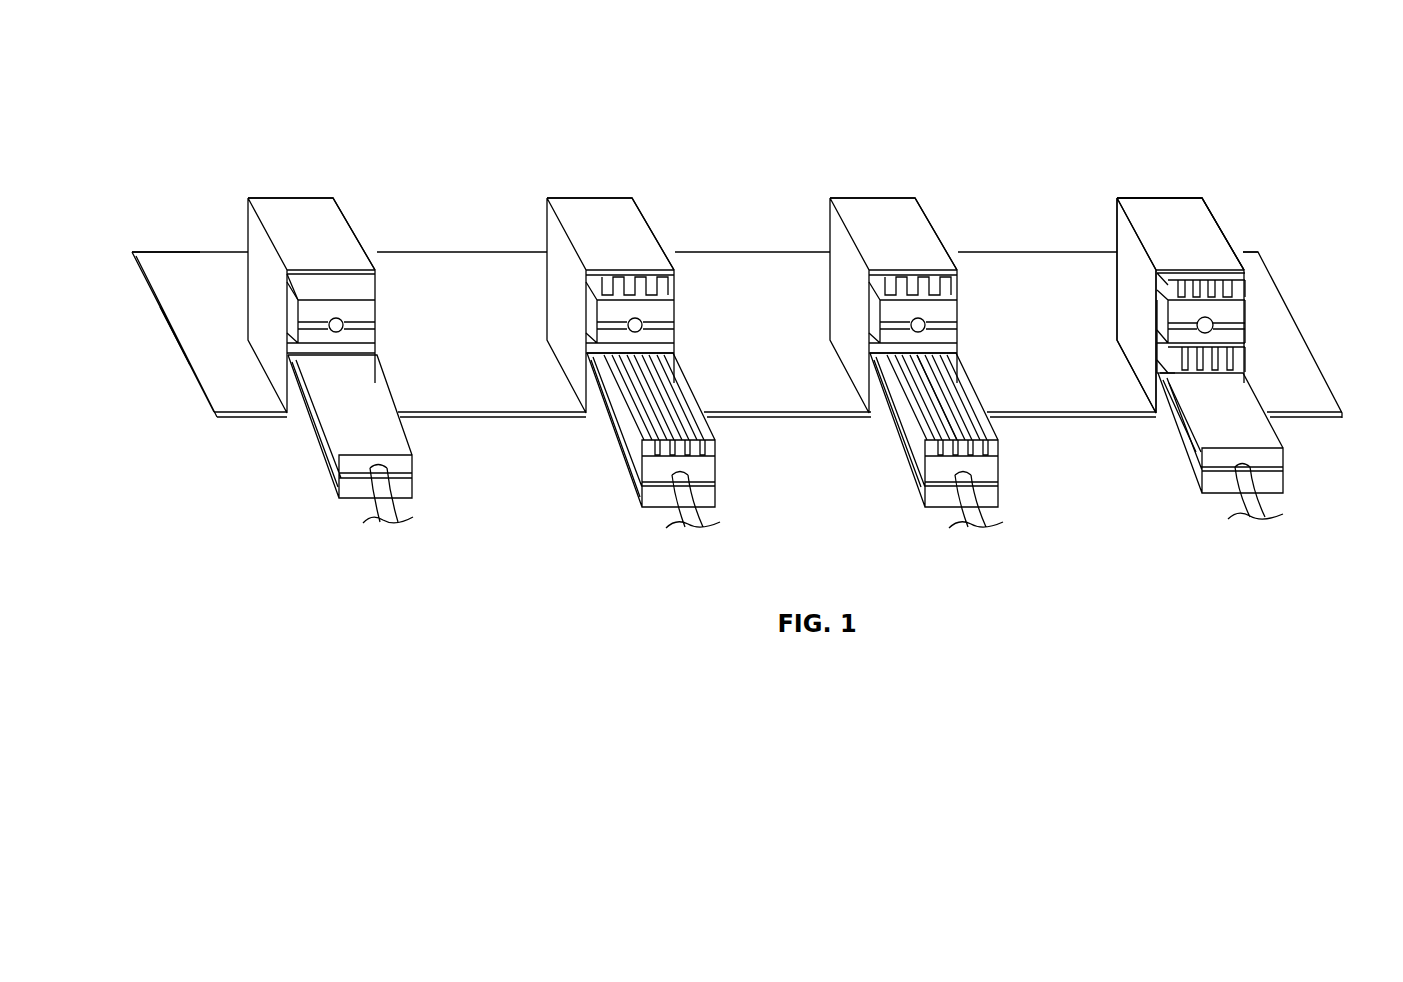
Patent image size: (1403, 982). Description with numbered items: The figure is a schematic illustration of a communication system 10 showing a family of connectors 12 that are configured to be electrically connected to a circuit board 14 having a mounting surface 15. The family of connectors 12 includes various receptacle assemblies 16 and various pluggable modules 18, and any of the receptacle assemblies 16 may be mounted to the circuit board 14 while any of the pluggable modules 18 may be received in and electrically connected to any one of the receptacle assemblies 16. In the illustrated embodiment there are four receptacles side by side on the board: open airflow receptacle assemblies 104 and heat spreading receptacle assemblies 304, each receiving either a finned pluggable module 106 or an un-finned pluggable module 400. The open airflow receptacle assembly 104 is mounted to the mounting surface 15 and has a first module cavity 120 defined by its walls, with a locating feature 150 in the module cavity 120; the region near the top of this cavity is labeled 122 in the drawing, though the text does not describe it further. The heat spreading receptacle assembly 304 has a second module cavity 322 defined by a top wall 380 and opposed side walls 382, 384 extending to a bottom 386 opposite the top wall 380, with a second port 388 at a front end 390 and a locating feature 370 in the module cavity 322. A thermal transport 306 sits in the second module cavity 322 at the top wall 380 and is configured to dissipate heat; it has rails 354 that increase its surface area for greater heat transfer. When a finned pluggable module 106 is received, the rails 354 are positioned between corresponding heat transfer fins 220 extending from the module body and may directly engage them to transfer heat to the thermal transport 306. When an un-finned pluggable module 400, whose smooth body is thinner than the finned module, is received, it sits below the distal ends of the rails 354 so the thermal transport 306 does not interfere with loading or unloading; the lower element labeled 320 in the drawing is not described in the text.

The communication system 10 is at (677, 108).
The family of connectors 12 is at (124, 286).
The circuit board 14 is at (200, 346).
The mounting surface 15 is at (190, 327).
The receptacle assembly 16 is at (297, 226).
The pluggable module 18 is at (348, 504).
The open airflow receptacle assembly 104 is at (345, 222).
The finned pluggable module 106 is at (714, 470).
The first module cavity 120 is at (350, 352).
The top wall of receptacle connector 122 is at (348, 283).
The locating feature 150 is at (298, 380).
The heat transfer fins 220 is at (963, 420).
The heat spreading receptacle assembly 304 is at (848, 263).
The thermal transport 306 is at (940, 282).
The lower heat sink 320 is at (1242, 358).
The second module cavity 322 is at (1242, 293).
The rails 354 is at (1242, 288).
The locating feature 370 is at (880, 388).
The top wall 380 is at (1190, 230).
The side wall 382 is at (1127, 290).
The side wall 384 is at (1246, 323).
The bottom 386 is at (1163, 370).
The second port 388 is at (1152, 310).
The front end 390 is at (1160, 368).
The un-finned pluggable module 400 is at (410, 466).